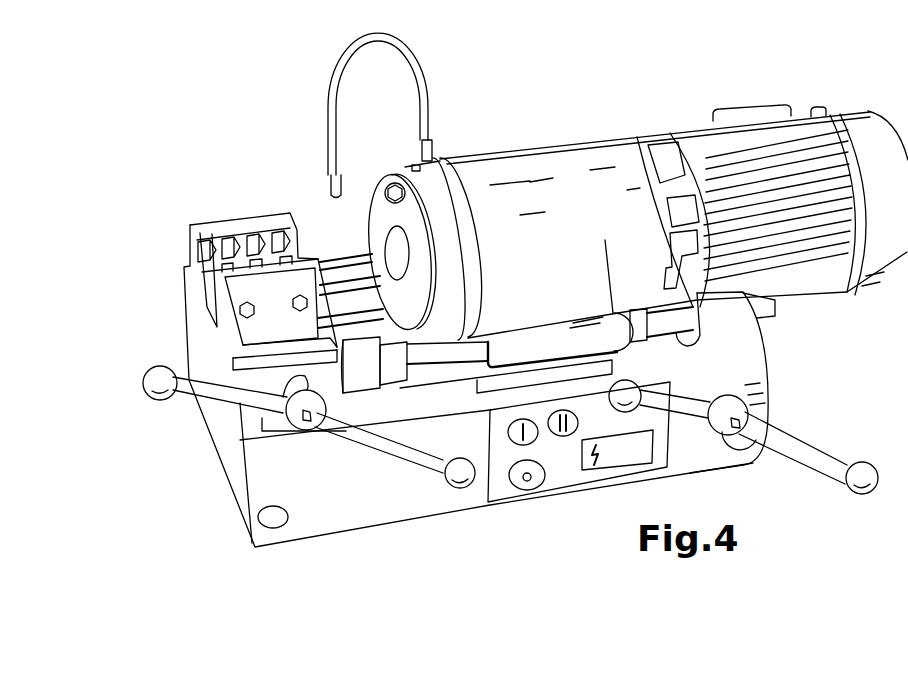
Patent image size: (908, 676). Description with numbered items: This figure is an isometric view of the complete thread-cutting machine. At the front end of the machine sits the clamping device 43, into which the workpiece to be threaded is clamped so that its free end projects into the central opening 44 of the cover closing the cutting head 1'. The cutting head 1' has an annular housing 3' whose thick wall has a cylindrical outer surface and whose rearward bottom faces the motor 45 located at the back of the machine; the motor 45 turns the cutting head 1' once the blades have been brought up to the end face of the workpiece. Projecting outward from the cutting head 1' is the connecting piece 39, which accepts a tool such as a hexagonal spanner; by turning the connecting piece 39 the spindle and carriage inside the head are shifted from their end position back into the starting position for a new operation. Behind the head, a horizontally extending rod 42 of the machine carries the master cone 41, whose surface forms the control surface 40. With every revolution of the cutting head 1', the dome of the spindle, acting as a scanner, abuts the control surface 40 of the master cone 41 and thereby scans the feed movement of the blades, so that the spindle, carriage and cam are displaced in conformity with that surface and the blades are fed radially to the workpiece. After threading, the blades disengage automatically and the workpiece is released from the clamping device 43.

The cutting head 1' is at (378, 186).
The annular housing 3' is at (656, 224).
The connecting piece 39 is at (388, 184).
The control surface 40 is at (376, 388).
The master cone 41 is at (362, 380).
The horizontally extending rod 42 is at (455, 368).
The clamping device 43 is at (180, 259).
The central opening of the cover 44 is at (397, 252).
The motor 45 is at (760, 130).